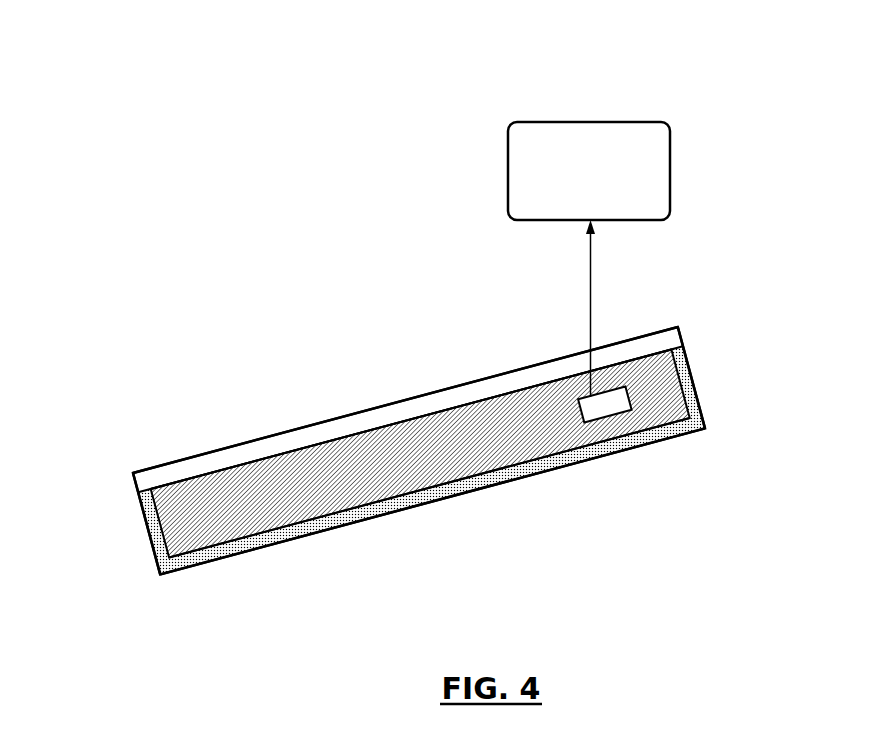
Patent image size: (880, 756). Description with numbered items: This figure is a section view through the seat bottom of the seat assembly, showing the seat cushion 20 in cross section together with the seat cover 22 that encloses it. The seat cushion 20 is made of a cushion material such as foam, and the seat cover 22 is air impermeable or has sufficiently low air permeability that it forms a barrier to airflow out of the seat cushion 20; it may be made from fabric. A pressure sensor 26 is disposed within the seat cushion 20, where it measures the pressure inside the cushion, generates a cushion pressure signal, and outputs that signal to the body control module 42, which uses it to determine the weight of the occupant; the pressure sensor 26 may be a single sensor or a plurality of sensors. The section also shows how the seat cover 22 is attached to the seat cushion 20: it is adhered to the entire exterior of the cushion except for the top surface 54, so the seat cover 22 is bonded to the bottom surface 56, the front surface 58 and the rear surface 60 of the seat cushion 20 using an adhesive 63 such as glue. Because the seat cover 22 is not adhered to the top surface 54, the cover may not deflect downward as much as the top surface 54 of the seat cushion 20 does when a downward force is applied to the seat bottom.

The seat cushion 20 is at (445, 422).
The seat cover 22 is at (350, 413).
The pressure sensor 26 is at (615, 408).
The body control module 42 is at (557, 121).
The top surface 54 is at (267, 457).
The bottom surface 56 is at (477, 472).
The front surface 58 is at (152, 548).
The rear surface 60 is at (695, 387).
The adhesive 63 is at (330, 520).